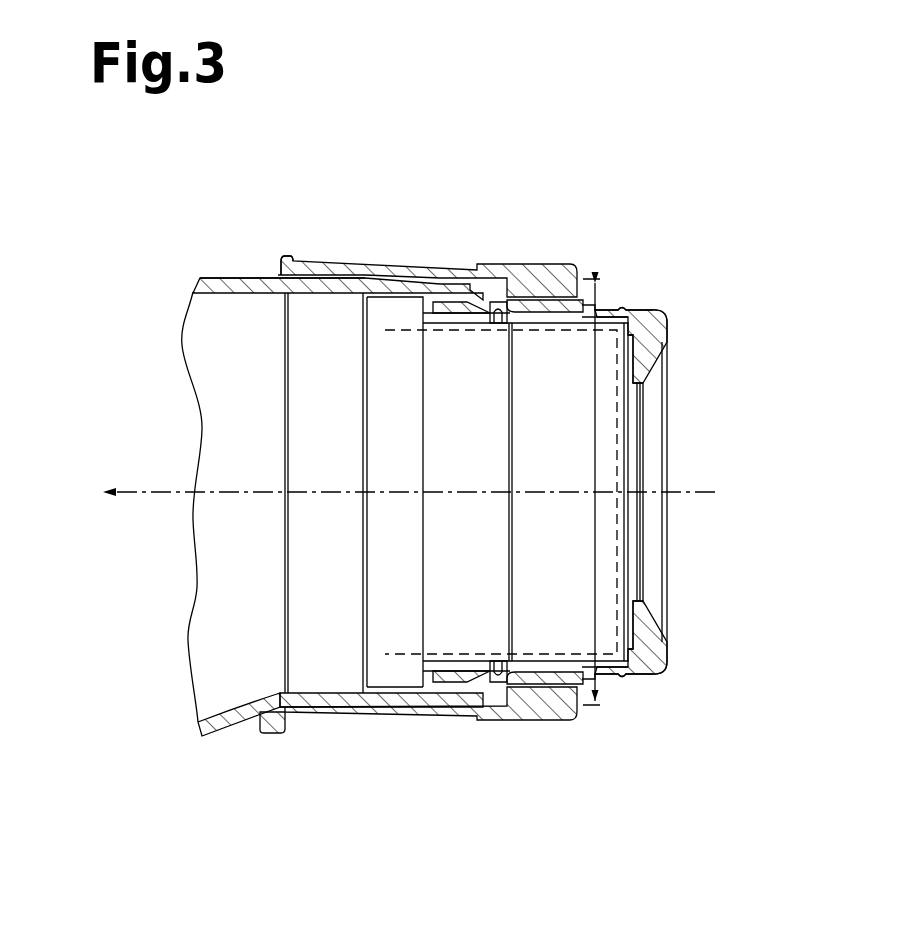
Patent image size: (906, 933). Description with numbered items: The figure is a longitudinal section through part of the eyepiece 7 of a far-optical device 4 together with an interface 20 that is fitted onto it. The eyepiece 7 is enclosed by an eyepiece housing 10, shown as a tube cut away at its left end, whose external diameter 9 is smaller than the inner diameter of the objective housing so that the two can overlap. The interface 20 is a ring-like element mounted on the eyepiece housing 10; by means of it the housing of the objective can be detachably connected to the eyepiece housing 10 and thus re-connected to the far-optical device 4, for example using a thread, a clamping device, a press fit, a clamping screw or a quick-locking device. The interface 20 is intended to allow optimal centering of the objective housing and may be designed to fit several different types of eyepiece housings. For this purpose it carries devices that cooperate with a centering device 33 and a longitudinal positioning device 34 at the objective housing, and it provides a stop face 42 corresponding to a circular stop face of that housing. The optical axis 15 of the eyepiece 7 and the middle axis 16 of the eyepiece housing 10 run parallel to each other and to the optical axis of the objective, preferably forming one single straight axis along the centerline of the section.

The far-optical device 4 is at (153, 267).
The eyepiece 7 is at (160, 720).
The external diameter 9 is at (597, 565).
The eyepiece housing 10 is at (265, 285).
The optical axis 15 is at (700, 492).
The middle axis 16 is at (183, 492).
The interface 20 is at (398, 264).
The centering device 33 is at (403, 737).
The longitudinal positioning device 34 is at (303, 745).
The stop face 42 is at (299, 256).